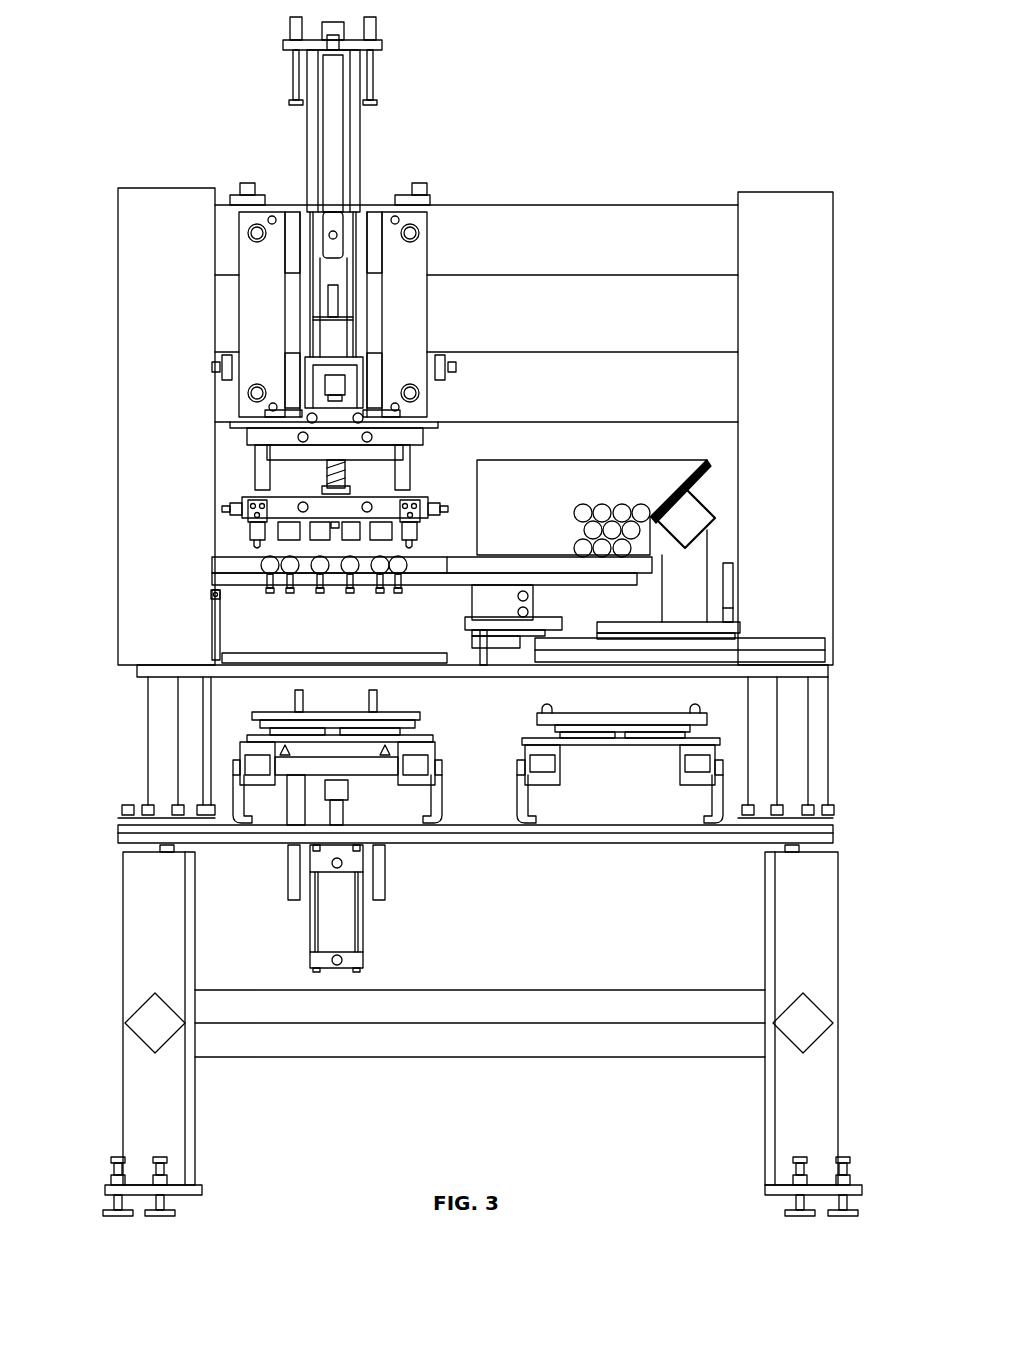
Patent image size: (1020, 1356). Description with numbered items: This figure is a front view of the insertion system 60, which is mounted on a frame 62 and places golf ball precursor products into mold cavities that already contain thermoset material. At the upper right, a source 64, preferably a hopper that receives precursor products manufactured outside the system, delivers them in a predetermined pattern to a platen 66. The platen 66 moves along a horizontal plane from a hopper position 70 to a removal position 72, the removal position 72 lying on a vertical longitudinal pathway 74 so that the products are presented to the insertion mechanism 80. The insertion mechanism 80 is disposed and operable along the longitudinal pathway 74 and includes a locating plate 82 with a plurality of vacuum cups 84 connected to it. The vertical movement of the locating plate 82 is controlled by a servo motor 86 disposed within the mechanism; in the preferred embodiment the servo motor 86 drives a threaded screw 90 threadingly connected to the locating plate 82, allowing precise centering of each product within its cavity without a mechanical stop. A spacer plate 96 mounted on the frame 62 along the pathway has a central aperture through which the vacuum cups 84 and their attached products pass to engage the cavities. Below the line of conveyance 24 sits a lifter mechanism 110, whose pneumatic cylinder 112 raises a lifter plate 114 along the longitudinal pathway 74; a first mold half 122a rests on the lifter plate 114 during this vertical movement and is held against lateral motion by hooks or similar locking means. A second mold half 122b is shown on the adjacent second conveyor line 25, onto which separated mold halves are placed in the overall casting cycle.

The insertion system 60 is at (607, 133).
The frame 62 is at (830, 934).
The source 64 is at (703, 470).
The platen 66 is at (210, 563).
The hopper position 70 is at (648, 575).
The removal position 72 is at (210, 580).
The longitudinal pathway 74 is at (210, 600).
The insertion mechanism 80 is at (178, 413).
The locating plate 82 is at (295, 497).
The vacuum cups 84 is at (275, 531).
The servo motor 86 is at (310, 295).
The threaded screw 90 is at (390, 475).
The spacer plate 96 is at (250, 653).
The lifter mechanism 110 is at (388, 930).
The pneumatic cylinder 112 is at (327, 937).
The lifter plate 114 is at (372, 763).
The first mold half 122a is at (258, 712).
The fixture 122b is at (655, 713).
The conveyor 24 is at (268, 802).
The second conveyor line 25 is at (624, 766).